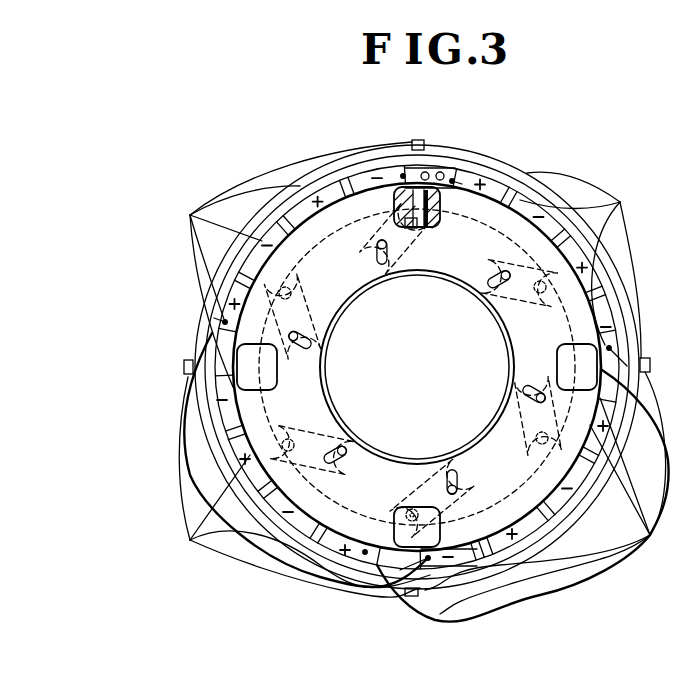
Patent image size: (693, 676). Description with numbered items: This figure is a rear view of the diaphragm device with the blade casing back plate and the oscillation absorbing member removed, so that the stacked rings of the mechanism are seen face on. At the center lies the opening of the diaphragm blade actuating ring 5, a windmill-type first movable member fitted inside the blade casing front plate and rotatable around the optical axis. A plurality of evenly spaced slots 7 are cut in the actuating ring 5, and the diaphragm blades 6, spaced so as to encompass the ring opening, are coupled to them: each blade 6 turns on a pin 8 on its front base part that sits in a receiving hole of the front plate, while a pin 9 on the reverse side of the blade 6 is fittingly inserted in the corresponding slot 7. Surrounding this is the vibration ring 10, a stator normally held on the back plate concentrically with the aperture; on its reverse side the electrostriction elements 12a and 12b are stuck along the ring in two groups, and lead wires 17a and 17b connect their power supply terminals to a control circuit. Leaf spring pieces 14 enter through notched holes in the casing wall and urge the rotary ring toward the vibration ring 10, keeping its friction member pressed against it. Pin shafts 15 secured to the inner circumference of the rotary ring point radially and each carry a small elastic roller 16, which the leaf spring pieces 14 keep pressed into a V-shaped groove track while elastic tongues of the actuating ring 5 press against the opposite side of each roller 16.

The diaphragm blade actuating ring 5 is at (512, 330).
The diaphragm blade 6 is at (394, 524).
The slot 7 is at (340, 447).
The pin 8 is at (283, 440).
The pin 9 is at (330, 460).
The vibration ring 10 is at (400, 170).
The electrostriction element 12a is at (424, 382).
The electrostriction element 12b is at (407, 384).
The leaf spring piece 14 is at (418, 140).
The pin shaft 15 is at (392, 216).
The small elastic roller 16 is at (445, 204).
The lead wire 17a is at (427, 171).
The lead wire 17b is at (446, 173).